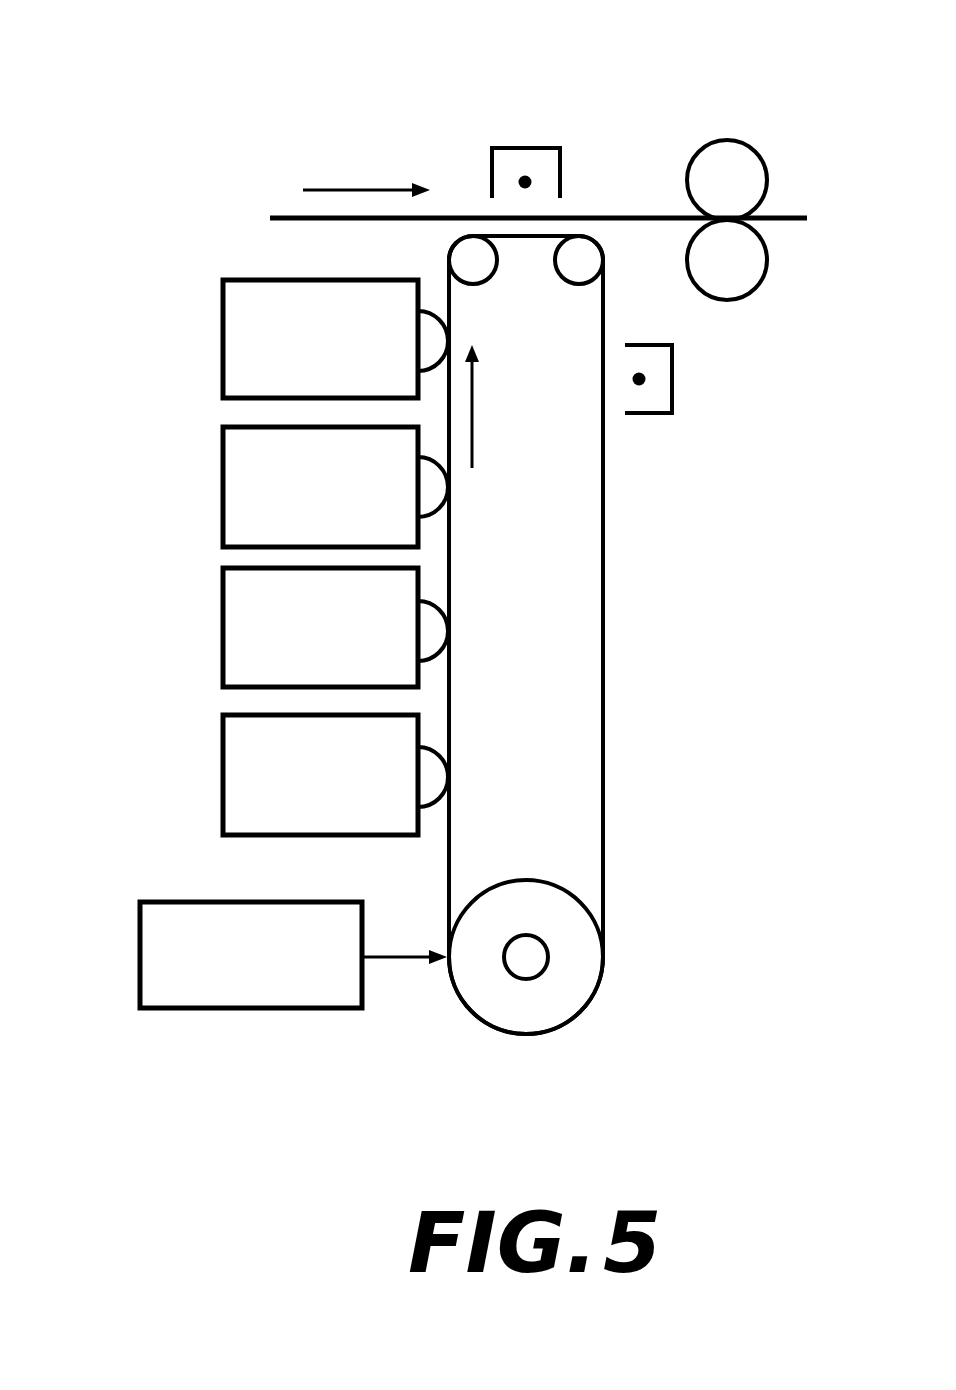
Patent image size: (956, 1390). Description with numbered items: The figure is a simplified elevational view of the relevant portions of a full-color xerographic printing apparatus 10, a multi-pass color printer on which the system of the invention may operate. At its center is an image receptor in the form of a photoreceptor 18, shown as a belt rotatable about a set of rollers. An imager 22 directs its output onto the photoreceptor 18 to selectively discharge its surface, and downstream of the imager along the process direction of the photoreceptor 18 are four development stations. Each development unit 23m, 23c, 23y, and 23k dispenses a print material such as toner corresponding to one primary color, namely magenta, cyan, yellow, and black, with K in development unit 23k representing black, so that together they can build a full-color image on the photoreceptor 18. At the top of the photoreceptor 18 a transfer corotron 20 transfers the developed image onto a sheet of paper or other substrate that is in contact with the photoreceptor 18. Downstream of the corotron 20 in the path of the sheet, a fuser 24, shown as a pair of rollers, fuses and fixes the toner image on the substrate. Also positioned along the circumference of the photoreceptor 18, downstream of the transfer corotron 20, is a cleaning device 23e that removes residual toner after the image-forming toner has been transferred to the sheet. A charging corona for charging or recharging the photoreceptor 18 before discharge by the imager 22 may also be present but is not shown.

The printing apparatus 10 is at (276, 52).
The photoreceptor 18 is at (603, 633).
The transfer corotron 20 is at (515, 147).
The imager 22 is at (140, 985).
The development unit 23k is at (223, 333).
The development unit 23y is at (223, 483).
The development unit 23c is at (223, 627).
The development unit 23m is at (223, 772).
The cleaning device 23e is at (672, 380).
The fuser 24 is at (720, 265).